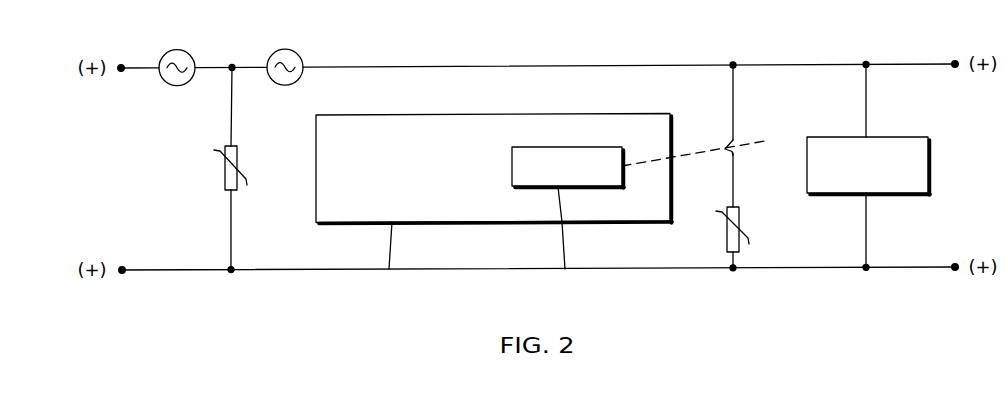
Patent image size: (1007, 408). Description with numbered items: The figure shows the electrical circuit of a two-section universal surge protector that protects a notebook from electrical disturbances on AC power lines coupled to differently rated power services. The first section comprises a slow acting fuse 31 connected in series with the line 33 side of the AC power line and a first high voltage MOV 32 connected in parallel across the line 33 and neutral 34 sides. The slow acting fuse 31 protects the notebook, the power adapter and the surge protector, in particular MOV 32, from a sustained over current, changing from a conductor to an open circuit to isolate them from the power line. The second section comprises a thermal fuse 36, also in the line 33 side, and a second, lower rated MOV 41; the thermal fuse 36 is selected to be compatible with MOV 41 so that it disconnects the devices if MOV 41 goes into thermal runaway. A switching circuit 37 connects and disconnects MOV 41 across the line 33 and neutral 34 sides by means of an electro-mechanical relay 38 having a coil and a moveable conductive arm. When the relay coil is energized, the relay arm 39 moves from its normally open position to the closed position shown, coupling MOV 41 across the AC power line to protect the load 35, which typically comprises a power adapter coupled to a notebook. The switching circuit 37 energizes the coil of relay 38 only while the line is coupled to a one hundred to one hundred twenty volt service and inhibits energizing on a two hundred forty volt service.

The slow acting fuse 31 is at (176, 50).
The first high voltage MOV 32 is at (224, 176).
The line side of AC power line 33 is at (143, 66).
The neutral side of AC power line 34 is at (168, 269).
The load 35 is at (930, 161).
The thermal fuse 36 is at (286, 49).
The switching circuit 37 is at (389, 269).
The electro-mechanical relay 38 is at (565, 269).
The relay arm 39 is at (726, 147).
The second lower rated MOV 41 is at (735, 255).